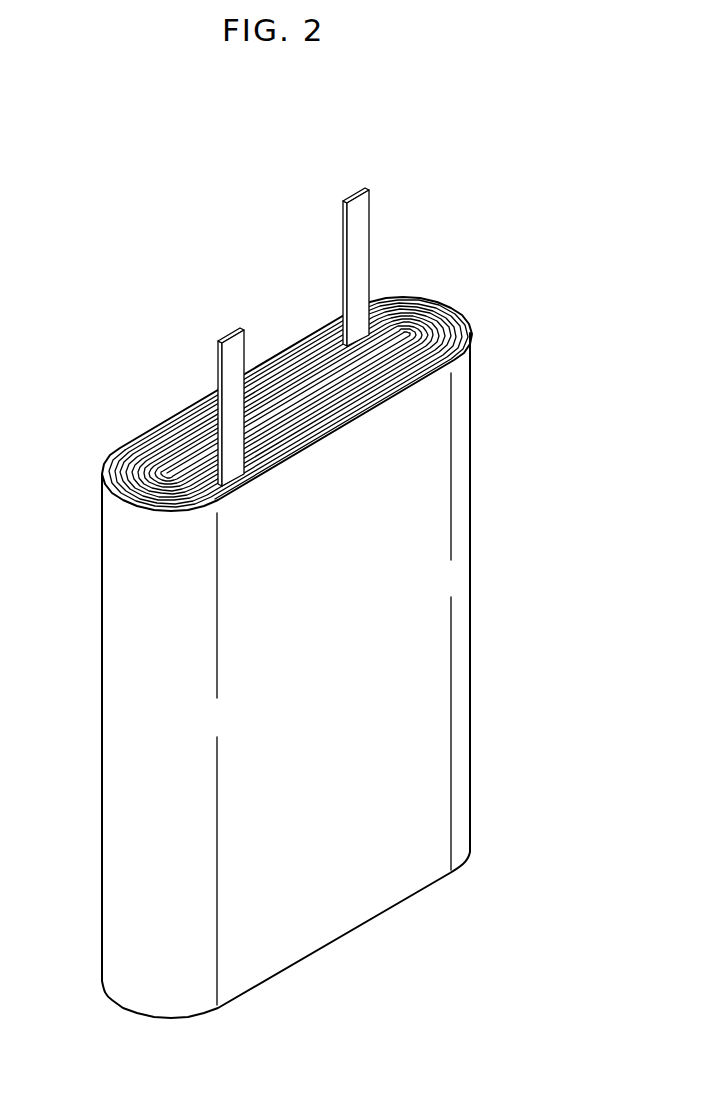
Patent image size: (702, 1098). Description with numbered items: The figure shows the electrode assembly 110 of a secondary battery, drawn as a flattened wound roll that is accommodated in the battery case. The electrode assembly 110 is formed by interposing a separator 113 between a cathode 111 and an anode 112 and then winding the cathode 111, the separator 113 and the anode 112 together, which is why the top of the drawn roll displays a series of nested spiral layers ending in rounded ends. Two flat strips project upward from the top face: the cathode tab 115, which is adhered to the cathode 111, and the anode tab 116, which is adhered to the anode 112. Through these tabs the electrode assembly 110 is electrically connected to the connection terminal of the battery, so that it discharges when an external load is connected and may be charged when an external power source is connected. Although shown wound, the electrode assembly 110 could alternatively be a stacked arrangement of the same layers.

The electrode assembly 110 is at (157, 288).
The cathode 111 is at (418, 295).
The anode 112 is at (455, 332).
The separator 113 is at (450, 317).
The cathode tab 115 is at (238, 353).
The anode tab 116 is at (363, 231).